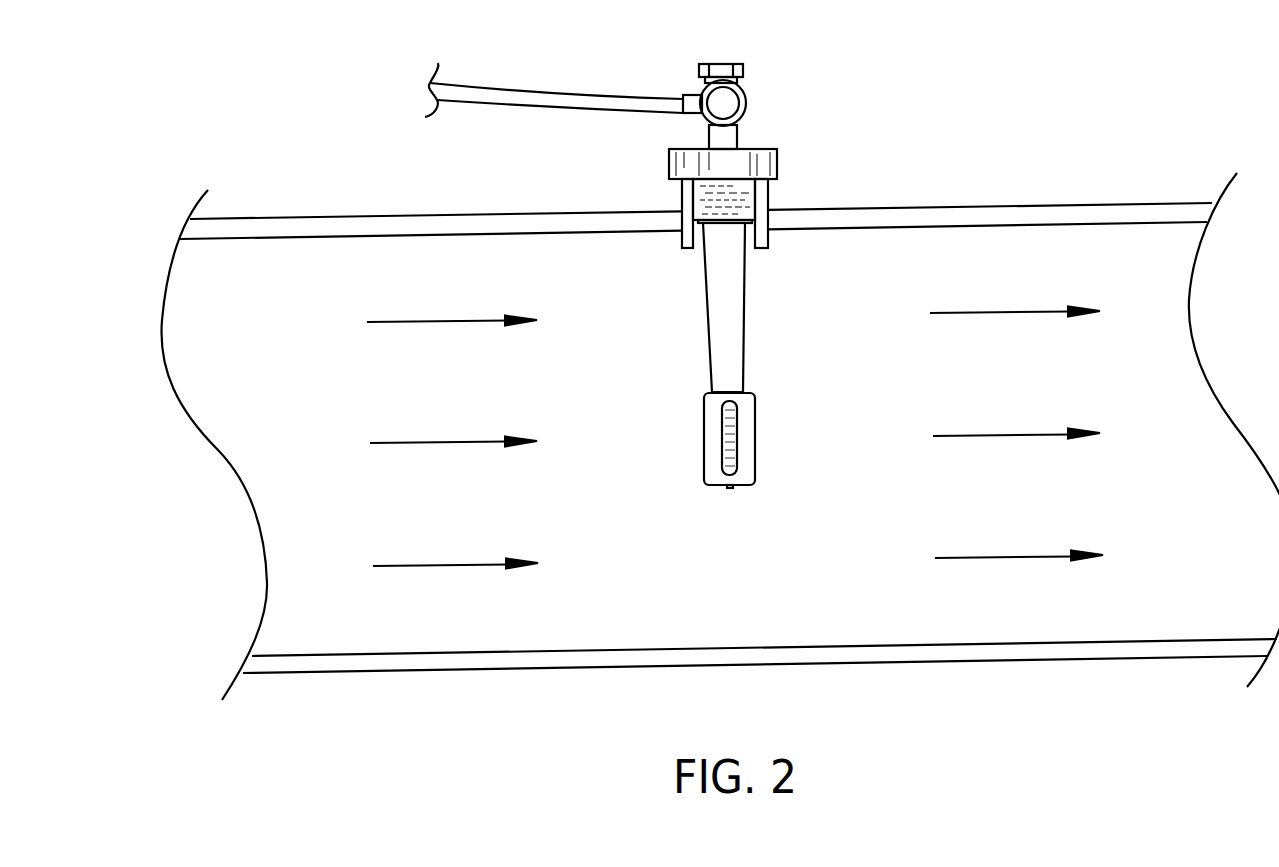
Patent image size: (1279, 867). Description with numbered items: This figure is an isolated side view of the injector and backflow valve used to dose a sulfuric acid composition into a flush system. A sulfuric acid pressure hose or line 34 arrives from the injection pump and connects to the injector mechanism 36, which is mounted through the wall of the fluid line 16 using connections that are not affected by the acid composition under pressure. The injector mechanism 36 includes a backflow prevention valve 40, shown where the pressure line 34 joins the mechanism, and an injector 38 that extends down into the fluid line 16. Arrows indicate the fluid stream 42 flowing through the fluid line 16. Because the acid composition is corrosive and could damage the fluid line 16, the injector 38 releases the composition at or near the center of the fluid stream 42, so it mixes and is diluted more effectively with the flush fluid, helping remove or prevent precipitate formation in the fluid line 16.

The fluid line 16 is at (1018, 203).
The sulfuric acid pressure hose or line 34 is at (518, 92).
The injector mechanism 36 is at (782, 142).
The injector 38 is at (703, 440).
The backflow prevention valve 40 is at (702, 66).
The fluid stream 42 is at (443, 565).